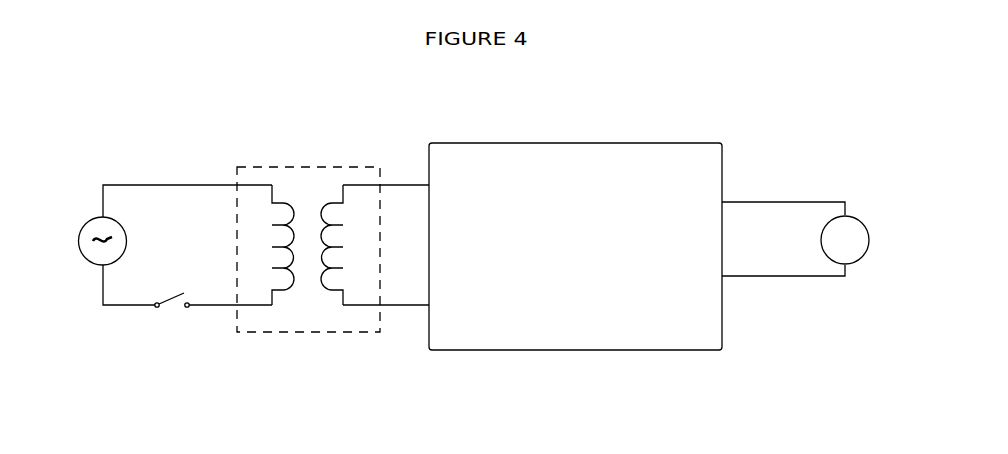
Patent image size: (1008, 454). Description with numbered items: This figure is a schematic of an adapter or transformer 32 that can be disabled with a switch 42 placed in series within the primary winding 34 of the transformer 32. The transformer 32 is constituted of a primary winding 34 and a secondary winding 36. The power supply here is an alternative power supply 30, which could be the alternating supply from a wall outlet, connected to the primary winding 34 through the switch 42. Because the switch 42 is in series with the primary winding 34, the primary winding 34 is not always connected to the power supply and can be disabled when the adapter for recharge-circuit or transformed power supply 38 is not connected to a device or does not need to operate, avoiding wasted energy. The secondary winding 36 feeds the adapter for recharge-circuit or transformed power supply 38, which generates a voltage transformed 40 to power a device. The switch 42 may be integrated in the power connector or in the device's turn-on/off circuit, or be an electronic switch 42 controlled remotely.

The alternative power supply 30 is at (92, 268).
The switch 42 is at (165, 312).
The transformer 32 is at (373, 334).
The primary winding 34 is at (268, 253).
The secondary winding 36 is at (350, 265).
The adapter for recharge-circuit or transformed power supply 38 is at (645, 312).
The voltage transformed 40 is at (855, 260).